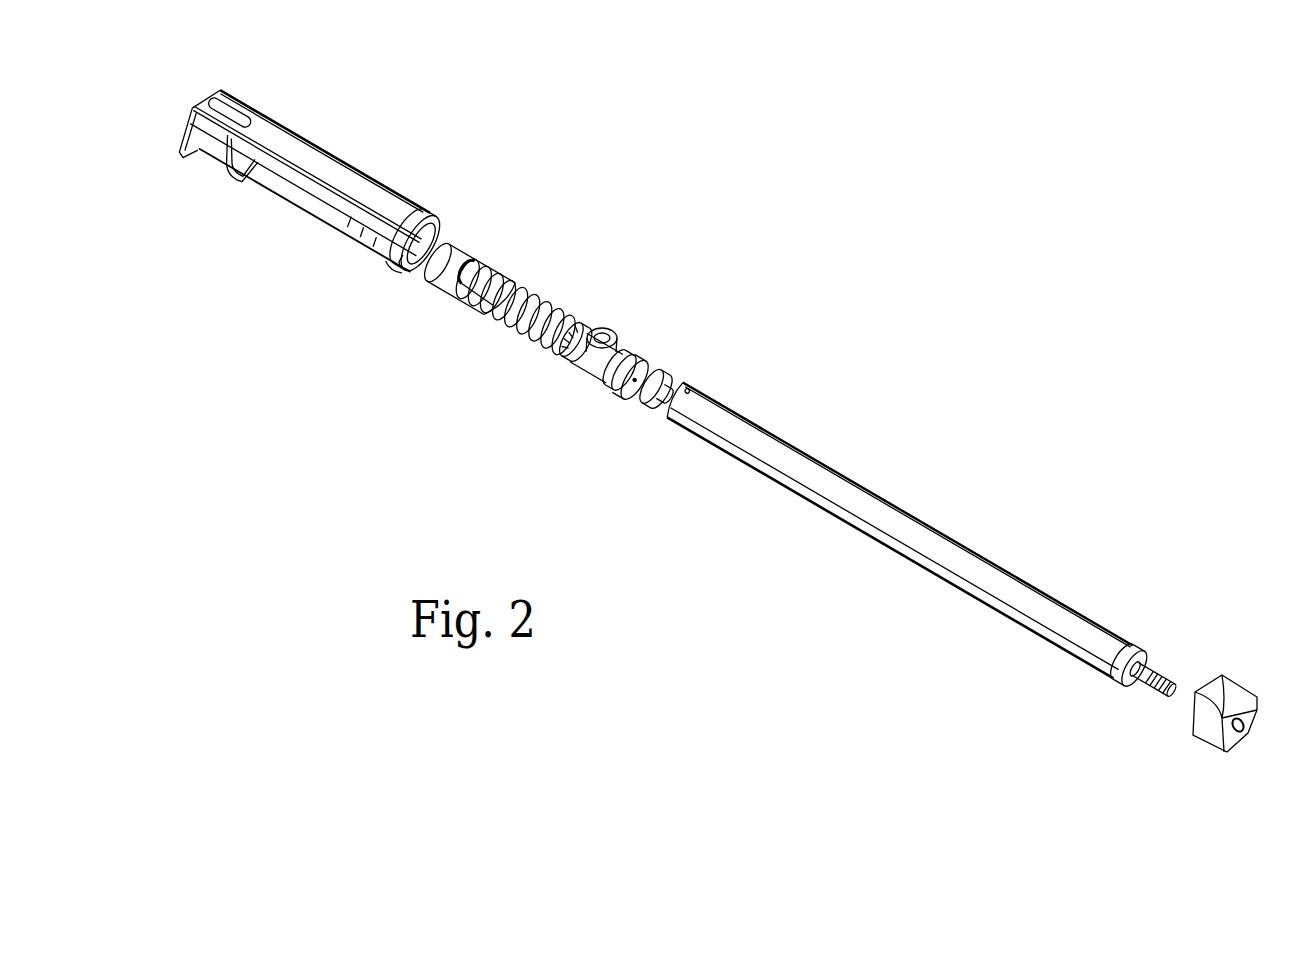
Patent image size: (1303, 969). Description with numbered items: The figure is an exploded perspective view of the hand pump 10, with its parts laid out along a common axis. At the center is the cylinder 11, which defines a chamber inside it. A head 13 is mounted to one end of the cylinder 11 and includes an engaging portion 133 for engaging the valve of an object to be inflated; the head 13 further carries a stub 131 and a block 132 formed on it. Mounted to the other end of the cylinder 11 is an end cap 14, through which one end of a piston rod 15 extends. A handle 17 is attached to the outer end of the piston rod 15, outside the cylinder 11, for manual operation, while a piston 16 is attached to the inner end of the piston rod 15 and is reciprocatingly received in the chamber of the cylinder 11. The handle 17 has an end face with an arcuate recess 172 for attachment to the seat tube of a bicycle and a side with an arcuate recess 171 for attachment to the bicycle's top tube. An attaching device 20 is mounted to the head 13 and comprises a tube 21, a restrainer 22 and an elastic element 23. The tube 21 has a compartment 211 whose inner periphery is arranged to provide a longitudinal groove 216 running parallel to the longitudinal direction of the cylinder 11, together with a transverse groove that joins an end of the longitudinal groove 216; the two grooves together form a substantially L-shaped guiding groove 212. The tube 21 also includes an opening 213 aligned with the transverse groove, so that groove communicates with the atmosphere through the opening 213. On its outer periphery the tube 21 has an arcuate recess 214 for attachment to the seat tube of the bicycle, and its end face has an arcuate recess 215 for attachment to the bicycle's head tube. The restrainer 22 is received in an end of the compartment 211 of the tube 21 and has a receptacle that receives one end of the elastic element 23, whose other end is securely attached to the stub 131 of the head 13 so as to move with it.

The hand pump 10 is at (921, 563).
The cylinder 11 is at (994, 565).
The head 13 is at (604, 339).
The stub 131 is at (574, 320).
The block 132 is at (610, 382).
The engaging portion 133 is at (610, 333).
The end cap 14 is at (1128, 688).
The piston rod 15 is at (1143, 663).
The piston 16 is at (663, 378).
The handle 17 is at (1239, 712).
The arcuate recess 171 is at (1217, 685).
The arcuate recess 172 is at (1237, 752).
The attaching device 20 is at (281, 194).
The tube 21 is at (296, 203).
The compartment 211 is at (425, 219).
The guiding groove 212 is at (412, 268).
The opening 213 is at (238, 188).
The arcuate recess 214 is at (286, 130).
The arcuate recess 215 is at (180, 136).
The longitudinal groove 216 is at (393, 268).
The restrainer 22 is at (457, 290).
The elastic element 23 is at (526, 290).